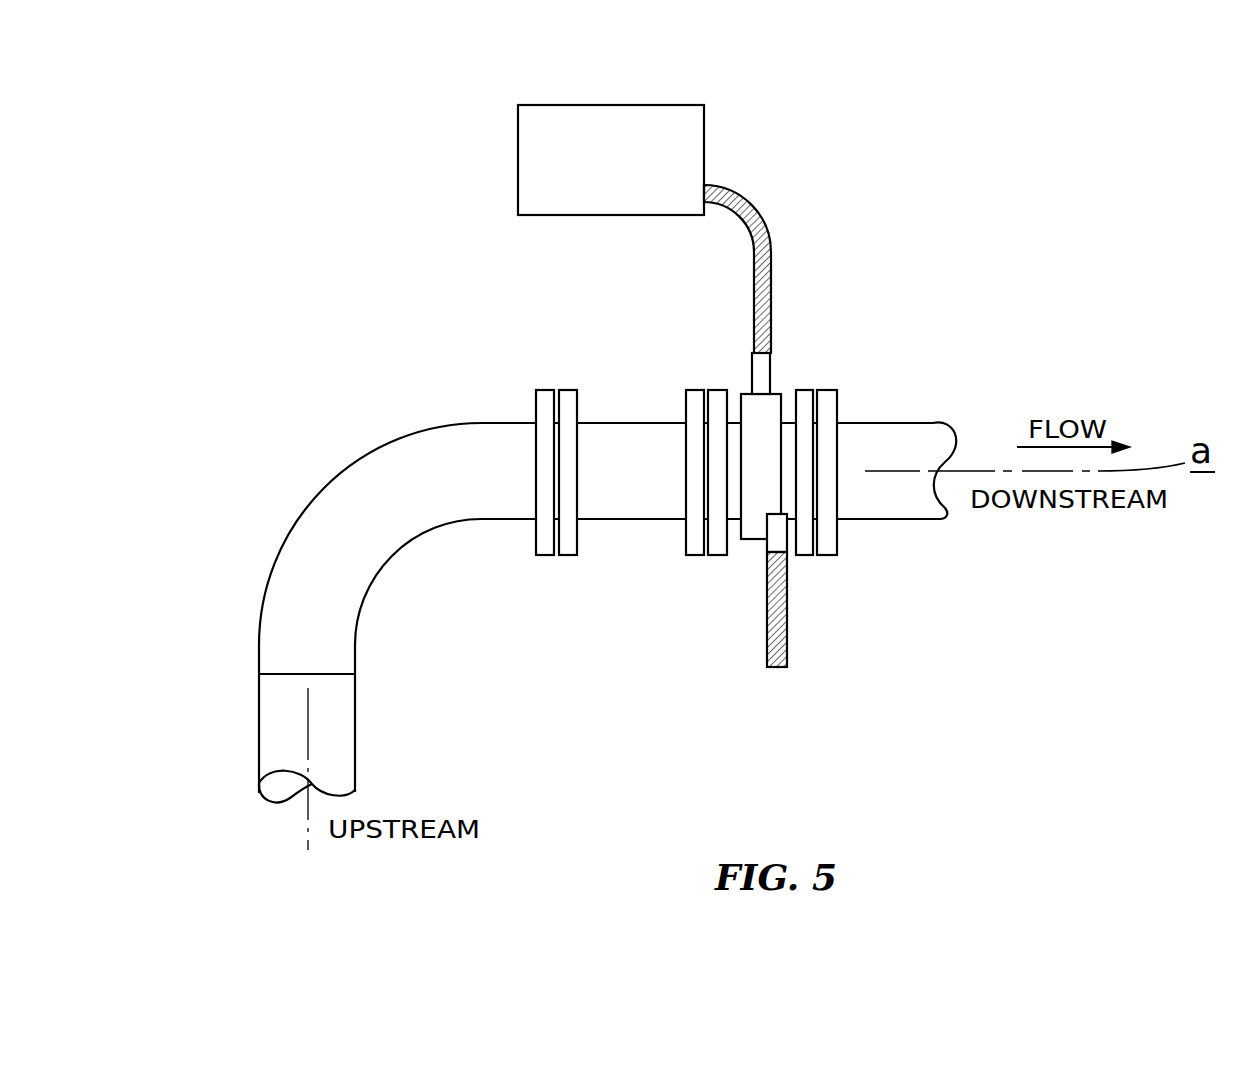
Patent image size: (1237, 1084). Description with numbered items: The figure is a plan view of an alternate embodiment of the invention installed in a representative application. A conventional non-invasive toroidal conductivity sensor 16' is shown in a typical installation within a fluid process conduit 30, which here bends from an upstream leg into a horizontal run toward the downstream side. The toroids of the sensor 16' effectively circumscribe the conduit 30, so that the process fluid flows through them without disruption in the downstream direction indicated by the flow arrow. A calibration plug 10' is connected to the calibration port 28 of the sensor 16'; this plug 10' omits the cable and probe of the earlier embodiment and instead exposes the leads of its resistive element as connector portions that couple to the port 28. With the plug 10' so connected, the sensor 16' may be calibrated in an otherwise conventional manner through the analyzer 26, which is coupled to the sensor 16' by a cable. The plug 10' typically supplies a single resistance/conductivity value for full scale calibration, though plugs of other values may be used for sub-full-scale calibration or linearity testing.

The analyzer 26 is at (704, 142).
The non-invasive toroidal conductivity sensor 16' is at (806, 417).
The calibration port 28 is at (762, 549).
The calibration plug 10' is at (725, 629).
The fluid process conduit 30 is at (288, 528).